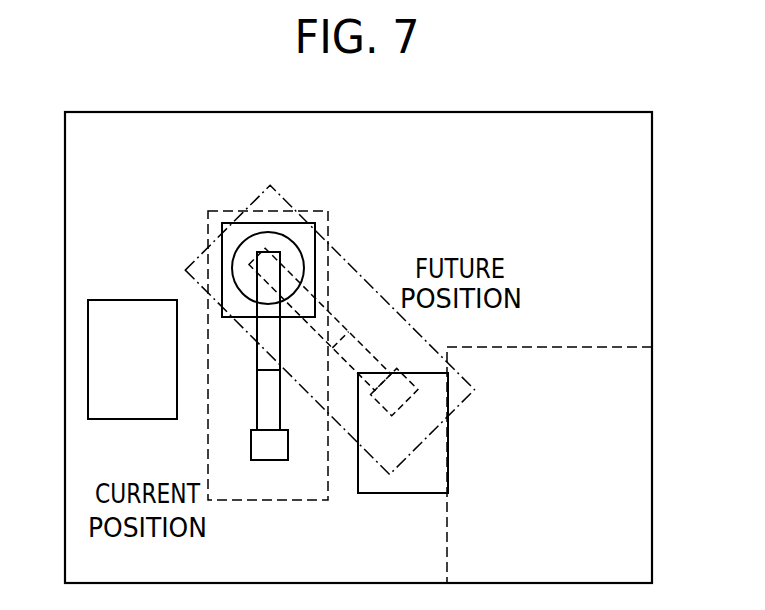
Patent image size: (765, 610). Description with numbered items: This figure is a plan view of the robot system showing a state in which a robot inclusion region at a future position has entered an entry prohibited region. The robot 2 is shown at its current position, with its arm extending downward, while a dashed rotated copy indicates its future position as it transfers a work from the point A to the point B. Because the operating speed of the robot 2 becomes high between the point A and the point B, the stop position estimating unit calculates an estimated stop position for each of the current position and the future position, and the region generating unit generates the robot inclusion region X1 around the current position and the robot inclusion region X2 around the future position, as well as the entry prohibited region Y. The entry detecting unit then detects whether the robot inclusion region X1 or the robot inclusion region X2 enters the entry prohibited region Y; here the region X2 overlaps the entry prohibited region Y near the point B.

The robot 2 is at (288, 466).
The robot inclusion region of the current position X1 is at (207, 217).
The robot inclusion region of the future position X2 is at (354, 270).
The entry prohibited region Y is at (552, 345).
The point A is at (132, 359).
The point B is at (403, 433).